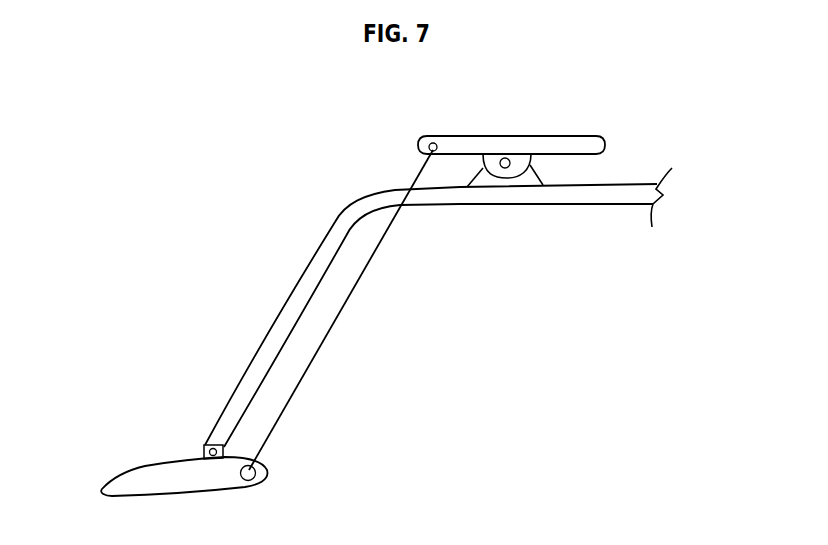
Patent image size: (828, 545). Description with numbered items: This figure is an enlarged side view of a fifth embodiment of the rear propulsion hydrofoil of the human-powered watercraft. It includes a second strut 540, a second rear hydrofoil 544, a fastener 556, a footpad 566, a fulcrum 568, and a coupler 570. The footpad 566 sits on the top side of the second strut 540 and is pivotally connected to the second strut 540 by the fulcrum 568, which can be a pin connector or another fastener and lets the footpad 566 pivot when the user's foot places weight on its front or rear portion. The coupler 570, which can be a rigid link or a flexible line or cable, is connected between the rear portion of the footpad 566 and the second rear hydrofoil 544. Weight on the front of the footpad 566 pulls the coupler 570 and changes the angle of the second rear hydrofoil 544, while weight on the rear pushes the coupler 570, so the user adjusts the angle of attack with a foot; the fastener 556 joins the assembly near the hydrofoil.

The second strut 540 is at (300, 292).
The second rear hydrofoil 544 is at (125, 486).
The fastener 556 is at (204, 445).
The footpad 566 is at (590, 140).
The fulcrum 568 is at (514, 176).
The coupler 570 is at (304, 372).